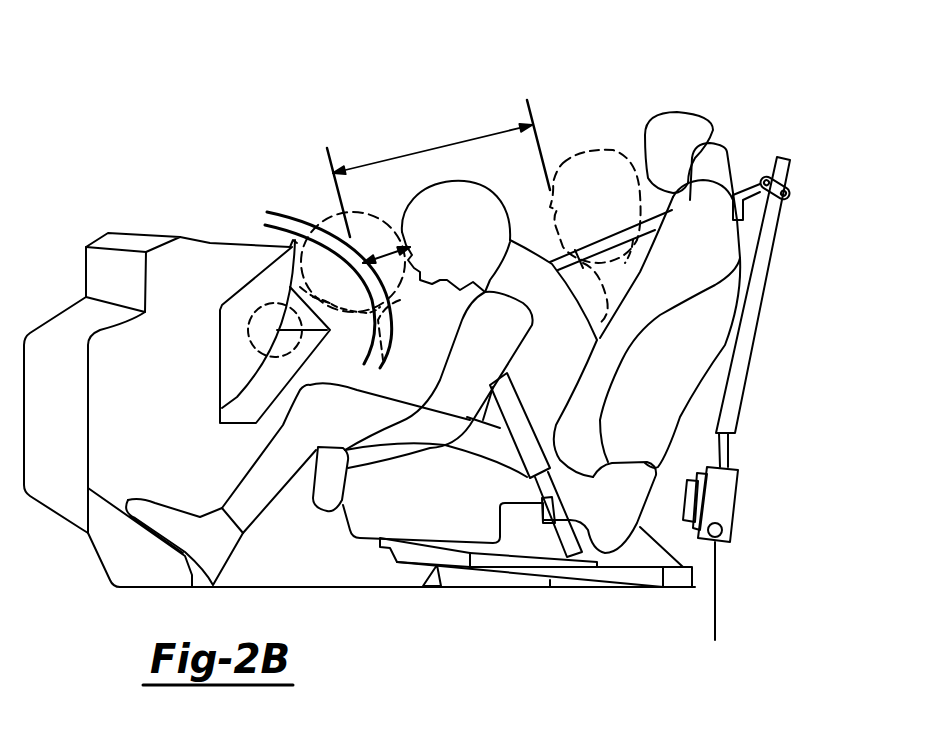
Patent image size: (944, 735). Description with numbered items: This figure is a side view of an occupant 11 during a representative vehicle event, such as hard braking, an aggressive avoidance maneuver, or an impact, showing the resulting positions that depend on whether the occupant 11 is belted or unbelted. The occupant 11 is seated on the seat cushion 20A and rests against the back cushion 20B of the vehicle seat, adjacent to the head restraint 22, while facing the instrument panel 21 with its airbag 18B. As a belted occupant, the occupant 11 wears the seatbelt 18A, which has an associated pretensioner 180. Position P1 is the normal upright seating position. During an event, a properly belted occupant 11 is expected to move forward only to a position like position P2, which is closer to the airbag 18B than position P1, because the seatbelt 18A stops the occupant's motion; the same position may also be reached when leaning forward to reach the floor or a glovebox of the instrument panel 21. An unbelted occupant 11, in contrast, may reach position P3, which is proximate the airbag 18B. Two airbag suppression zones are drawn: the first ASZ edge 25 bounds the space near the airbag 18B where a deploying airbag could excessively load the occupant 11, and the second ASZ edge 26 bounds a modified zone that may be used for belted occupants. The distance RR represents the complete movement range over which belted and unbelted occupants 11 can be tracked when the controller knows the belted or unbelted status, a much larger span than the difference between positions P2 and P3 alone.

The instrument panel 21 is at (148, 158).
The airbag 18B is at (250, 322).
The position P3 is at (308, 200).
The first ASZ edge 25 is at (375, 332).
The second ASZ edge 26 is at (380, 322).
The distance RR is at (440, 147).
The occupant 11 is at (557, 108).
The position P2 is at (466, 175).
The position P1 is at (588, 135).
The head restraint 22 is at (707, 113).
The back cushion 20B is at (680, 372).
The seat cushion 20A is at (402, 508).
The seatbelt 18A is at (762, 248).
The pretensioner 180 is at (733, 513).